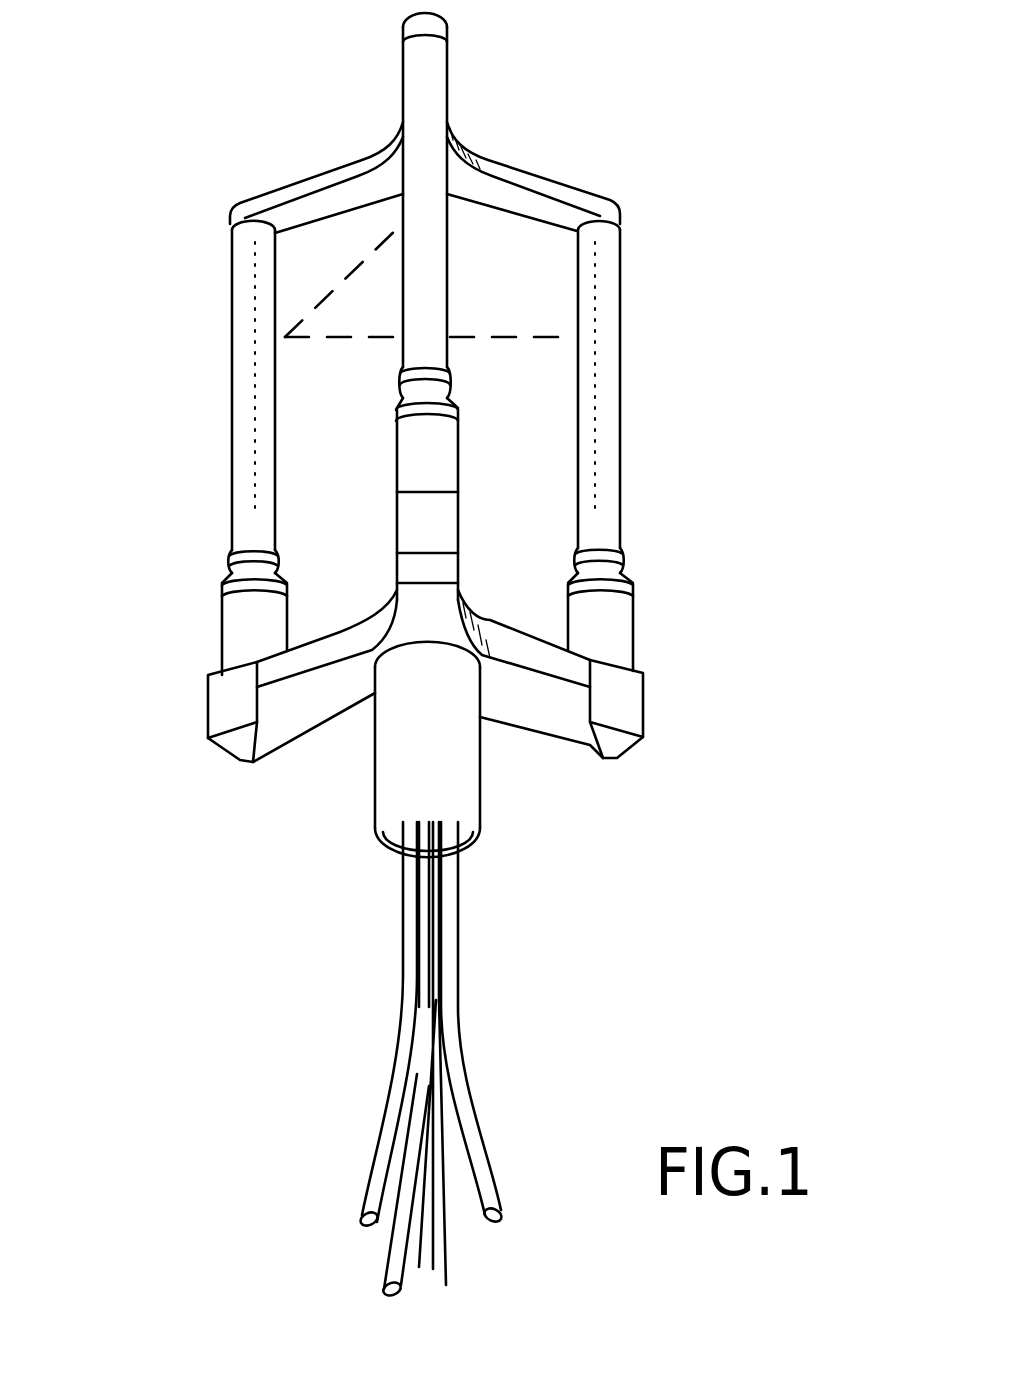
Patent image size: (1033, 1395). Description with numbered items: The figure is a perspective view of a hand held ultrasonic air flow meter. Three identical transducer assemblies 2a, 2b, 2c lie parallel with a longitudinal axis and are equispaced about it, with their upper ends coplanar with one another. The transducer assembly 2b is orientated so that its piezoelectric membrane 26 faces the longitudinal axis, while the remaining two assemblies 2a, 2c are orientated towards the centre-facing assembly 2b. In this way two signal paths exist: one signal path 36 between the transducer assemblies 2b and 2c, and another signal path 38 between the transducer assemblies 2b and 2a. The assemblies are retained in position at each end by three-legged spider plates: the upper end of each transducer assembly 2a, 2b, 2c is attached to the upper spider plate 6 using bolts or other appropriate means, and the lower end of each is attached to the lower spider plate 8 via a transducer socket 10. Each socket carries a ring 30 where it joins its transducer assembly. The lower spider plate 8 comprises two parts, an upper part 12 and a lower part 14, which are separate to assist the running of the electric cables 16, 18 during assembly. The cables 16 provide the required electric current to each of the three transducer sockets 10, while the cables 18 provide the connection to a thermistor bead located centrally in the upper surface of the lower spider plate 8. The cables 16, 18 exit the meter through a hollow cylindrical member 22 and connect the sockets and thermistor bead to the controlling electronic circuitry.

The upper spider plate 6 is at (583, 190).
The transducer assembly 2a is at (430, 258).
The transducer assembly 2b is at (228, 258).
The transducer assembly 2c is at (603, 235).
The piezoelectric membrane 26 is at (588, 457).
The signal path 38 is at (373, 252).
The signal path 36 is at (397, 335).
The sealing ring 30 is at (433, 387).
The transducer socket 10 is at (437, 518).
The upper part 12 is at (347, 637).
The lower part 14 is at (323, 740).
The lower spider plate 8 is at (515, 717).
The hollow cylindrical member 22 is at (390, 768).
The electric cables 16 is at (372, 1160).
The electric cables 18 is at (448, 1269).